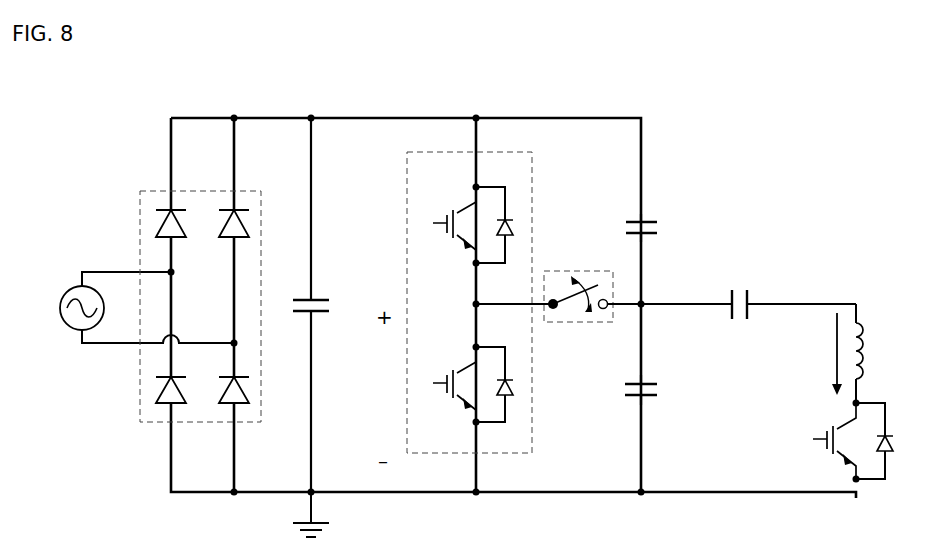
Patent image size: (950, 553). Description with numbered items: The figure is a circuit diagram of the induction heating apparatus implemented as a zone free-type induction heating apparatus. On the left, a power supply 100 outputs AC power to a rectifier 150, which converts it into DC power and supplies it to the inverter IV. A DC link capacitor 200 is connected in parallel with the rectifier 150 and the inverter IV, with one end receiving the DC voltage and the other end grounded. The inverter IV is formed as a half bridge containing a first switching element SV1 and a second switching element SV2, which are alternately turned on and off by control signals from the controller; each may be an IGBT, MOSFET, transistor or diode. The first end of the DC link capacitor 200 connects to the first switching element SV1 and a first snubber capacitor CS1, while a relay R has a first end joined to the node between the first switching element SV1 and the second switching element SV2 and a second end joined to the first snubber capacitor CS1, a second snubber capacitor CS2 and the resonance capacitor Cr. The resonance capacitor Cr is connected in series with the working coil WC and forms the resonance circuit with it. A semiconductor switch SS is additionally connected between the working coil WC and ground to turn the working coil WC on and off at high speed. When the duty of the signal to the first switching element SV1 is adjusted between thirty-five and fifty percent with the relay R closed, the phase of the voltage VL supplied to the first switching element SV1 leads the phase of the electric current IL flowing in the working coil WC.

The power supply 100 is at (68, 330).
The rectifier 150 is at (155, 423).
The DC link capacitor 200 is at (317, 297).
The inverter IV is at (469, 264).
The first switching element SV1 is at (465, 208).
The second switching element SV2 is at (457, 403).
The relay R is at (583, 270).
The first snubber capacitor CS1 is at (645, 217).
The second snubber capacitor CS2 is at (647, 380).
The resonance capacitor Cr is at (750, 291).
The working coil WC is at (867, 325).
The semiconductor switch SS is at (875, 398).
The electric current IL is at (827, 354).
The voltage VL is at (378, 394).